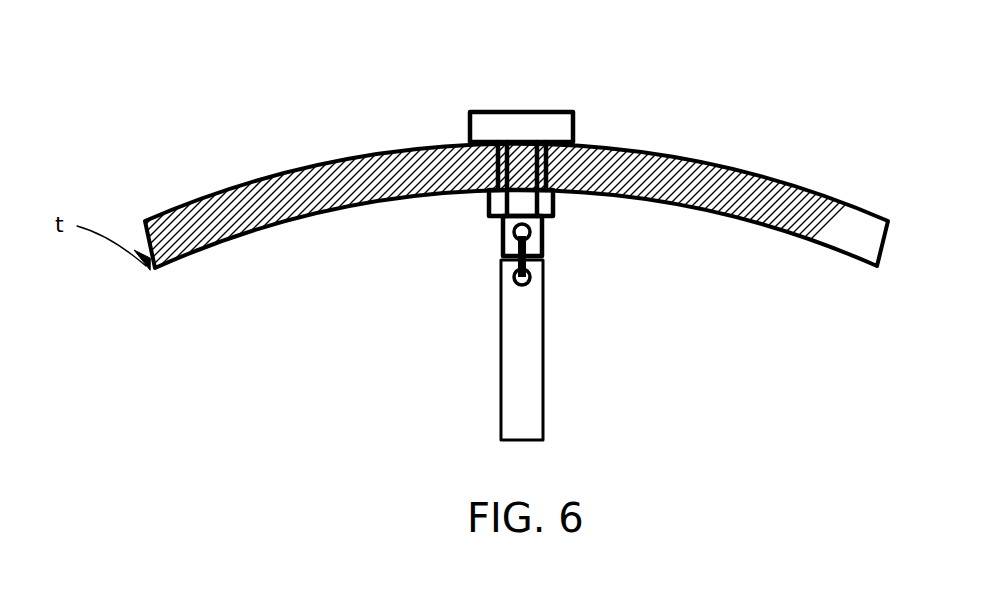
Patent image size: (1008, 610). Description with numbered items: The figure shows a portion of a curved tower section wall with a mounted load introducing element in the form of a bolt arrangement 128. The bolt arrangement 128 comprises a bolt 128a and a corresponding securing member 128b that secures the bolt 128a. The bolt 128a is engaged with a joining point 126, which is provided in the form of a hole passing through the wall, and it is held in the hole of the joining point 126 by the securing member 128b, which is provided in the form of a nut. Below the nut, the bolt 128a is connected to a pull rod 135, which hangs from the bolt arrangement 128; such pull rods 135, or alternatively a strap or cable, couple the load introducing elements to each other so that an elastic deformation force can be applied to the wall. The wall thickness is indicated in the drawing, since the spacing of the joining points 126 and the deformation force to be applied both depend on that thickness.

The joining point 126 is at (573, 142).
The bolt arrangement 128 is at (537, 209).
The bolt 128a is at (487, 112).
The securing member 128b is at (490, 210).
The pull rod 135 is at (532, 375).